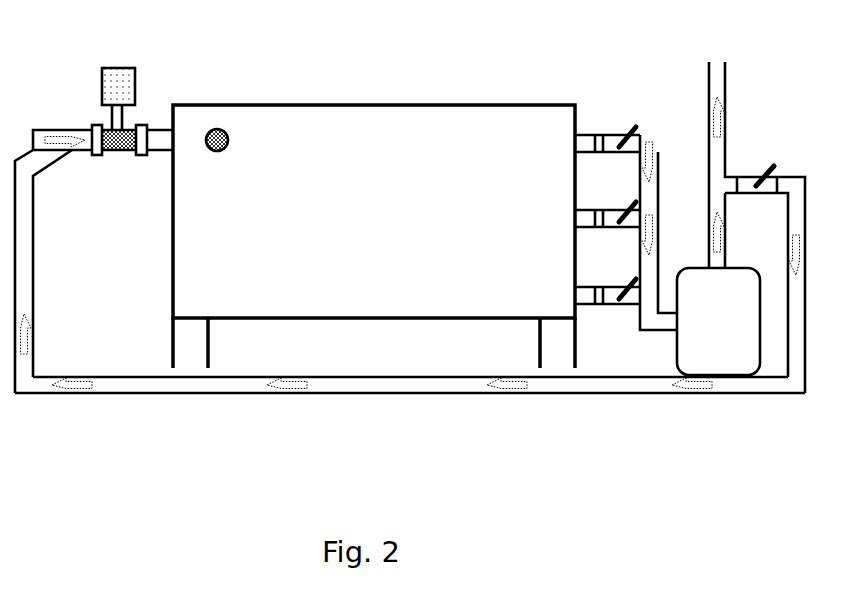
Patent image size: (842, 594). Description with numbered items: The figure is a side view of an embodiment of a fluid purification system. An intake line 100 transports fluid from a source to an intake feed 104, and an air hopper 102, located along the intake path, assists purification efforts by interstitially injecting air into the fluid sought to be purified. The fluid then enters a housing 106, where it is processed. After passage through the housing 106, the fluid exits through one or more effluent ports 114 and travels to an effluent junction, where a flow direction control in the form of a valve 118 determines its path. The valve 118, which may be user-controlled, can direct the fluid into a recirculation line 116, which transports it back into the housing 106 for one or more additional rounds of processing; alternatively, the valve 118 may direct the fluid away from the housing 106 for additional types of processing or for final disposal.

The intake line 100 is at (55, 130).
The air hopper 102 is at (113, 67).
The intake feed 104 is at (155, 130).
The housing 106 is at (370, 105).
The effluent ports 114 is at (593, 287).
The recirculation line 116 is at (388, 394).
The valve 118 is at (776, 165).